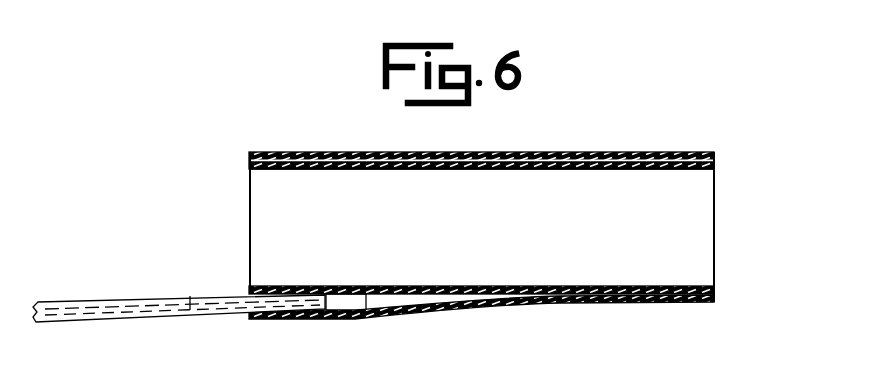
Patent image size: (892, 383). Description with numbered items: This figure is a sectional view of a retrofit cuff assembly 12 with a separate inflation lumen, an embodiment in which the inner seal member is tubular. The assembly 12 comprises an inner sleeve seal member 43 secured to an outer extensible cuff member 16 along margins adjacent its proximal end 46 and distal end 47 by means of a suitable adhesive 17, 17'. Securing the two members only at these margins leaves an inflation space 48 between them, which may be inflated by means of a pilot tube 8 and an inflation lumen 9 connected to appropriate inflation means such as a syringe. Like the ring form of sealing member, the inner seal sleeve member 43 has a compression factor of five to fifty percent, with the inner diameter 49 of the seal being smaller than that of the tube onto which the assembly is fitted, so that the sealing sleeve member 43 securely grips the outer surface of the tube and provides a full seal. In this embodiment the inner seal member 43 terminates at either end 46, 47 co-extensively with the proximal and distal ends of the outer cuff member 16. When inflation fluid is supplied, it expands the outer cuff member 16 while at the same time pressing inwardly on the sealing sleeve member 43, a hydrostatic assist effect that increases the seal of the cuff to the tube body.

The pilot tube 8 is at (116, 313).
The inflation lumen 9 is at (201, 306).
The connector assembly 12 is at (612, 102).
The outer extensible cuff member 16 is at (600, 152).
The adhesive 17 is at (304, 136).
The adhesive 17' is at (678, 134).
The inner sleeve seal member 43 is at (460, 170).
The proximal end 46 is at (249, 206).
The distal end 47 is at (716, 199).
The inflation space 48 is at (452, 155).
The inner diameter 49 is at (539, 172).